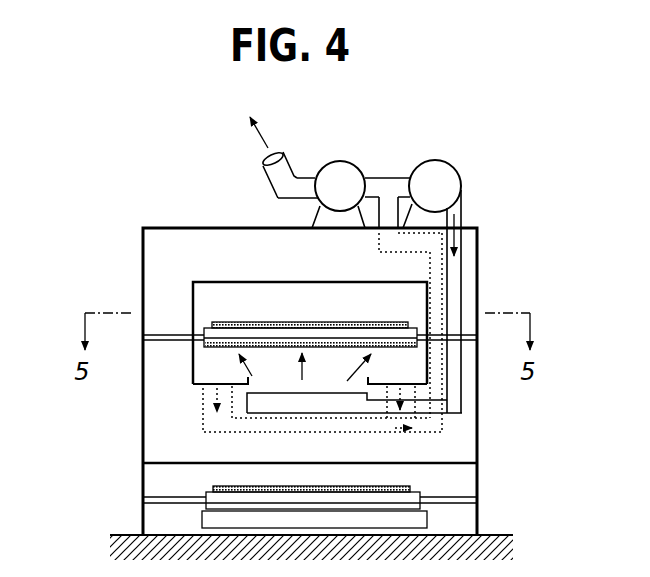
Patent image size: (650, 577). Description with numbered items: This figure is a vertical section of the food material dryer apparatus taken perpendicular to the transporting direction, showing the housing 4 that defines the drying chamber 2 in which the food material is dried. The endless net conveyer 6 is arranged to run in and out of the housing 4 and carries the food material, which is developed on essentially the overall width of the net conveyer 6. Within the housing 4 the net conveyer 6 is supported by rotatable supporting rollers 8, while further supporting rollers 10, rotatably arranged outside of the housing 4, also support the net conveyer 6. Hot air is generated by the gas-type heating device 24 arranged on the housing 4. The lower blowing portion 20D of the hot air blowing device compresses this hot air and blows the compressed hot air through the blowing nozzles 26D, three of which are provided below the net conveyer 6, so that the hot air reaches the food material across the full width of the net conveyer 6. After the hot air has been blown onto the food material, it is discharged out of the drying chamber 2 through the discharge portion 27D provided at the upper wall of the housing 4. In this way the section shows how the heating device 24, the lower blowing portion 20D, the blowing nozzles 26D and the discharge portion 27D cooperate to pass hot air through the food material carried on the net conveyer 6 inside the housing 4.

The drying chamber 2 is at (465, 433).
The housing 4 is at (141, 416).
The net conveyer 6 is at (237, 322).
The supporting rollers 8 is at (222, 338).
The supporting rollers 10 is at (402, 495).
The gas-type heating device 24 is at (411, 161).
The lower blowing portion 20D is at (456, 161).
The blowing nozzles 26D is at (265, 412).
The discharge portion 27D is at (447, 272).